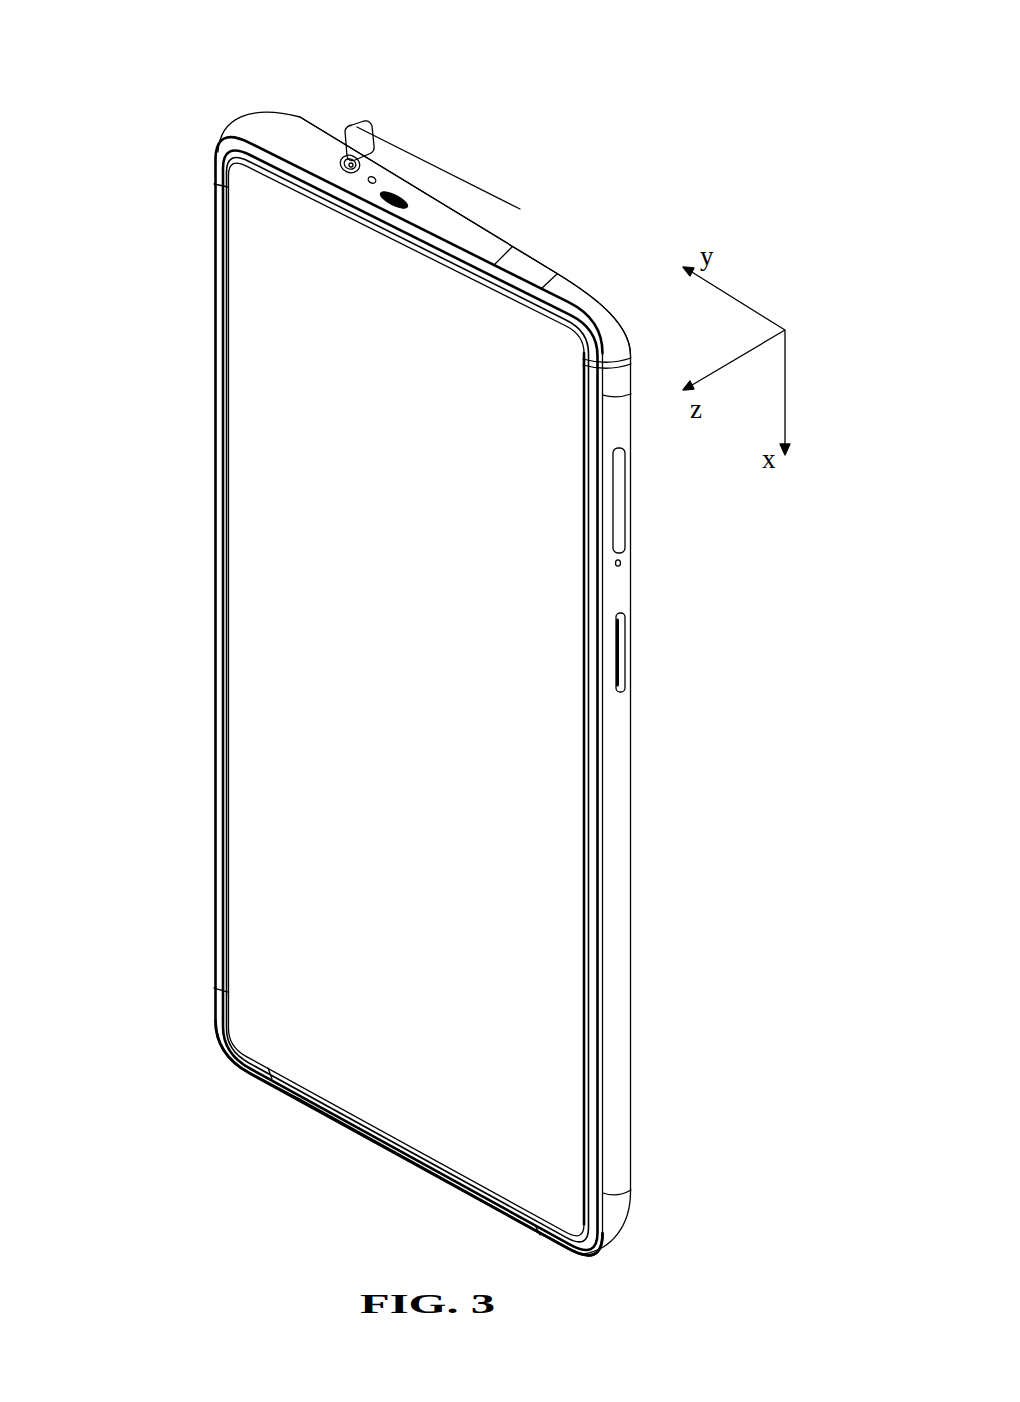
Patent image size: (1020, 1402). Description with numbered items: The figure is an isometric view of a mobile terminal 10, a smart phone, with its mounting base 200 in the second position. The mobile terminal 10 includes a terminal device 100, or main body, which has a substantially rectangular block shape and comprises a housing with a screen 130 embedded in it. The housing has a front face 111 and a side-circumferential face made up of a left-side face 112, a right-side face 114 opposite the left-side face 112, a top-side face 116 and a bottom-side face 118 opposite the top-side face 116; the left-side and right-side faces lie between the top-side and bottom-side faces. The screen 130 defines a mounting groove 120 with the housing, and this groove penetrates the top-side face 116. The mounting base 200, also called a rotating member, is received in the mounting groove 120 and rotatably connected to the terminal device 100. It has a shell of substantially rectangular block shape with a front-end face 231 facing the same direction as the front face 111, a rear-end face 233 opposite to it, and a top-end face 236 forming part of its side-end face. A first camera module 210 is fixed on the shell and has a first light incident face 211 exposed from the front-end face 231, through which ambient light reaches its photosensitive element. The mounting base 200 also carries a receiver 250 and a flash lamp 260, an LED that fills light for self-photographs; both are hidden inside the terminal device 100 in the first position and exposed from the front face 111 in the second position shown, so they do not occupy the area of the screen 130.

The mobile terminal 10 is at (418, 639).
The terminal device 100 is at (418, 683).
The front face 111 is at (250, 921).
The left-side face 112 is at (625, 800).
The right-side face 114 is at (212, 753).
The top-side face 116 is at (540, 282).
The bottom-side face 118 is at (340, 1124).
The mounting groove 120 is at (347, 160).
The screen 130 is at (280, 420).
The mounting base 200 is at (366, 159).
The first camera module 210 is at (360, 111).
The first light incident face 211 is at (358, 127).
The front-end face 231 is at (428, 226).
The rear-end face 233 is at (428, 180).
The top-end face 236 is at (389, 163).
The receiver 250 is at (367, 183).
The flash lamp 260 is at (386, 206).